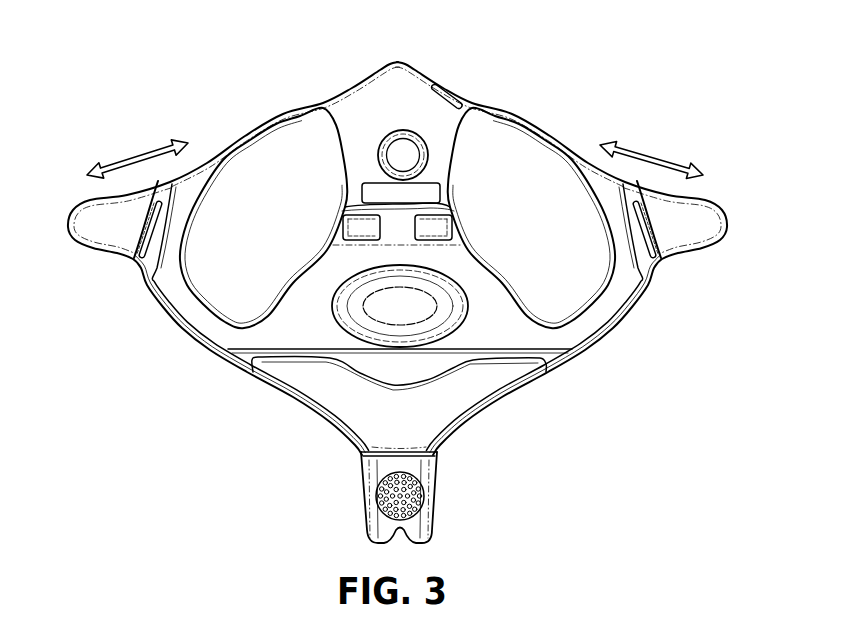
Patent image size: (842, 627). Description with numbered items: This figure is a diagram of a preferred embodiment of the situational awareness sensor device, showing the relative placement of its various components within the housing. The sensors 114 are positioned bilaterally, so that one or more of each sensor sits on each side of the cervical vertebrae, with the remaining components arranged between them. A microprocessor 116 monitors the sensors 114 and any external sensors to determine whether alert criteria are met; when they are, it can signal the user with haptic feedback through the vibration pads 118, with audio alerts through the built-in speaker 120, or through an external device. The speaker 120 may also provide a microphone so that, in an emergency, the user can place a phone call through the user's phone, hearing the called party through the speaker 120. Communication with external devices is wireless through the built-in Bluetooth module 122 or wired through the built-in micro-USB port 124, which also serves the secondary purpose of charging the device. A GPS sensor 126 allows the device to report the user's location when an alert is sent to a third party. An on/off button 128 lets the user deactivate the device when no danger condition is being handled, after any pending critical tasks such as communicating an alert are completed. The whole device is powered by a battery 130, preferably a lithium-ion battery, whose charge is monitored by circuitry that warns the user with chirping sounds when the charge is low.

The sensors 114 is at (552, 150).
The microprocessor 116 is at (437, 297).
The vibration pads 118 is at (343, 392).
The speaker 120 is at (377, 508).
The Bluetooth module 122 is at (440, 232).
The micro-USB port 124 is at (452, 107).
The GPS sensor 126 is at (358, 232).
The on/off button 128 is at (402, 143).
The battery 130 is at (372, 193).